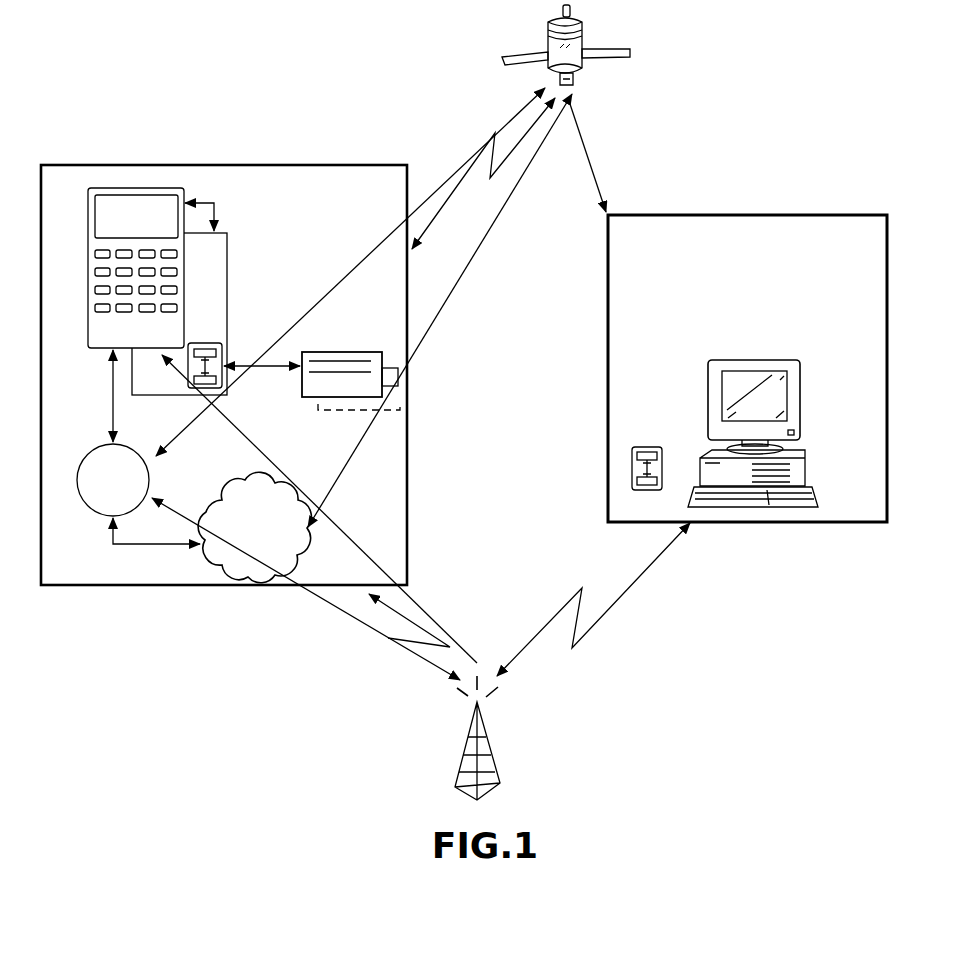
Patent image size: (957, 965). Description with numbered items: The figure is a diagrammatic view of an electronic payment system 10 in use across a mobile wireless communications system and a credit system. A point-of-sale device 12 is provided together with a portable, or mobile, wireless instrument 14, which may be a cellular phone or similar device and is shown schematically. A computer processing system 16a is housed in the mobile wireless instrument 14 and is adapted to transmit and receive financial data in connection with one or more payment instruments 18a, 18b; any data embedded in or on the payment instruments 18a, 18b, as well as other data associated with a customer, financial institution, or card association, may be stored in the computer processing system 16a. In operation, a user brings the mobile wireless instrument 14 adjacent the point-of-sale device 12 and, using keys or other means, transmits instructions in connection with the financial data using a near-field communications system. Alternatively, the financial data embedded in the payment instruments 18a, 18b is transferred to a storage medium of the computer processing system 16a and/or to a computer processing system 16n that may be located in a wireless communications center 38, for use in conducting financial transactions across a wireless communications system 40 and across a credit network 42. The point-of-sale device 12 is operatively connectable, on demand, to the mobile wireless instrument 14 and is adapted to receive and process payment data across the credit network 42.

The electronic payment system 10 is at (186, 126).
The point-of-sale device 12 is at (92, 506).
The mobile wireless instrument 14 is at (170, 186).
The computer processing system 16a is at (212, 336).
The computer processing system 16n is at (632, 460).
The payment instrument 18a is at (386, 352).
The payment instrument 18b is at (400, 386).
The wireless communications center 38 is at (806, 215).
The wireless communications system 40 is at (622, 130).
The credit network 42 is at (234, 574).